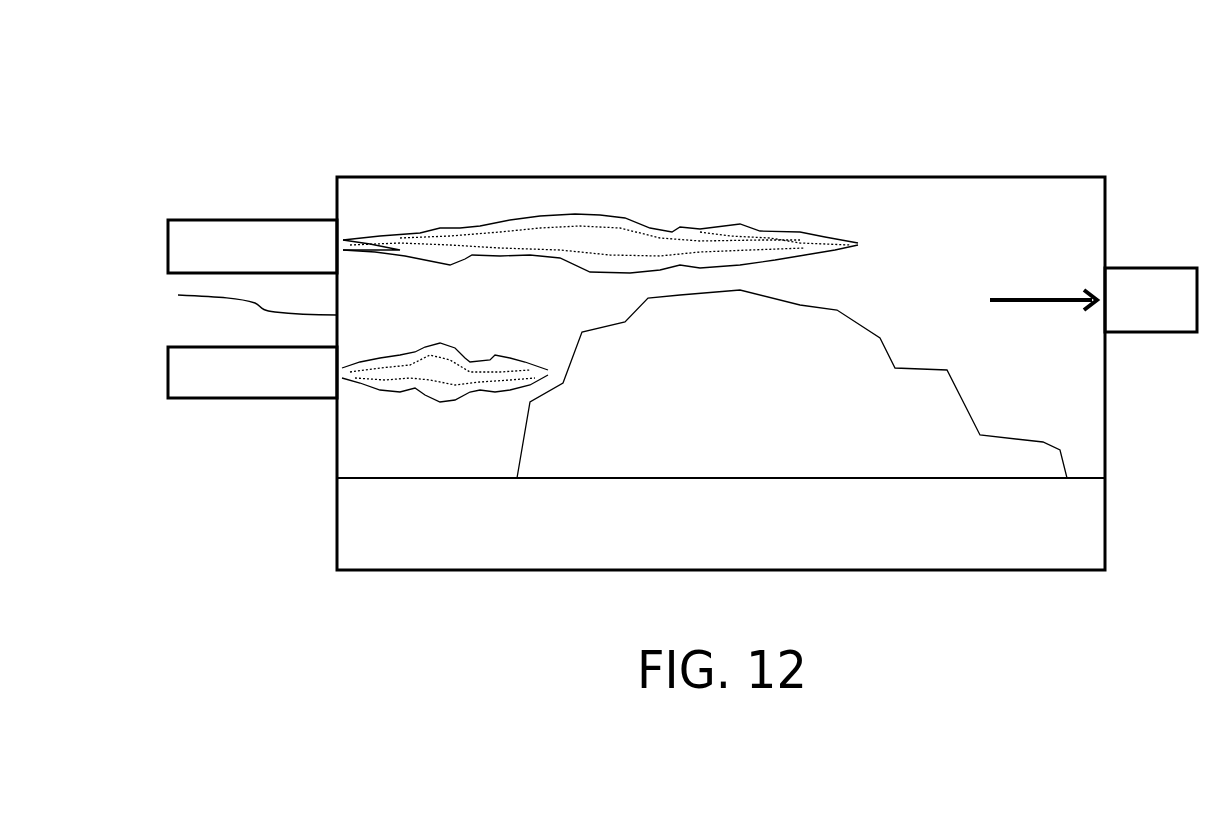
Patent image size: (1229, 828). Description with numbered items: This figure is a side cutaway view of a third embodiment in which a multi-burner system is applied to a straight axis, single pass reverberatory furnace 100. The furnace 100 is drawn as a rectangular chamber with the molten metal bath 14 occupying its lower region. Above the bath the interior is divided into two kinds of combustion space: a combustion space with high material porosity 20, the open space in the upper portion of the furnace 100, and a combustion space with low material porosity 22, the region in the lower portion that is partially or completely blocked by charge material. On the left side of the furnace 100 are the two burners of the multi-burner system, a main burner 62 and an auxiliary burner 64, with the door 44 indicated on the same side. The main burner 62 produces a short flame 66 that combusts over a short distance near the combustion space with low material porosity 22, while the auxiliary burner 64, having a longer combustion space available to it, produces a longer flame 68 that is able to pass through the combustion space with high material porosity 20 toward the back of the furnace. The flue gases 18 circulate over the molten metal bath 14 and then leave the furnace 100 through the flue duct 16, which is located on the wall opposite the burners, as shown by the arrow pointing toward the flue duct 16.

The furnace 100 is at (907, 147).
The molten metal bath 14 is at (733, 541).
The flue duct 16 is at (1153, 310).
The flue gases 18 is at (1024, 305).
The combustion space with high material porosity 20 is at (997, 235).
The combustion space with low material porosity 22 is at (742, 415).
The door 44 is at (238, 300).
The main burner 62 is at (260, 386).
The auxiliary burner 64 is at (260, 260).
The short flame 66 is at (427, 398).
The longer flame 68 is at (488, 258).